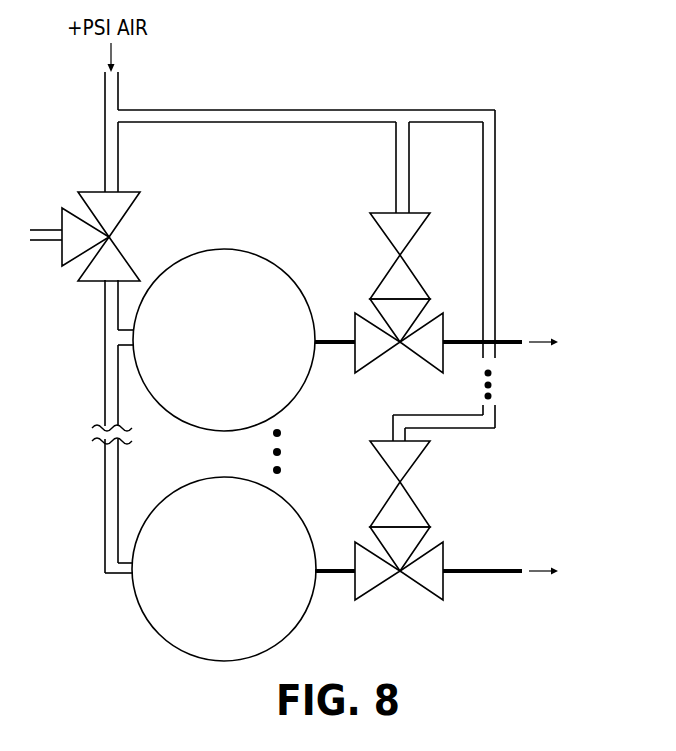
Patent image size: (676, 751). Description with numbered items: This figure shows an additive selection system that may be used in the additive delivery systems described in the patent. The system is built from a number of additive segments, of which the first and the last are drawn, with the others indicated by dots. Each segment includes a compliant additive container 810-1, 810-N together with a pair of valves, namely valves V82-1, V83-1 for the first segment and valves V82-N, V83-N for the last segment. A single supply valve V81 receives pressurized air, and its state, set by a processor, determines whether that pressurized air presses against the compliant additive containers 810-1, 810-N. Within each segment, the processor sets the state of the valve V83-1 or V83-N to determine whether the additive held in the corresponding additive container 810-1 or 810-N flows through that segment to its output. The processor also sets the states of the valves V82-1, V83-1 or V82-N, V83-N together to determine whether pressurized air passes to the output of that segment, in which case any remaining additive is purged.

The valve V81 is at (94, 236).
The additive container 810-1 is at (196, 351).
The additive container 810-N is at (195, 580).
The valve V82-1 is at (416, 277).
The valve V83-1 is at (399, 352).
The valve V82-N is at (419, 506).
The valve V83-N is at (399, 580).